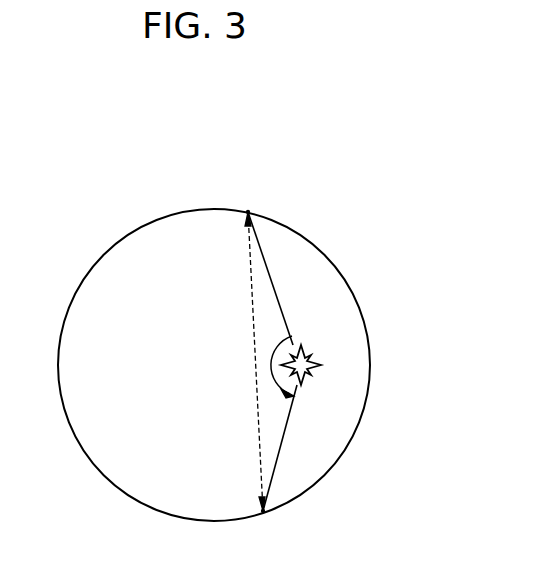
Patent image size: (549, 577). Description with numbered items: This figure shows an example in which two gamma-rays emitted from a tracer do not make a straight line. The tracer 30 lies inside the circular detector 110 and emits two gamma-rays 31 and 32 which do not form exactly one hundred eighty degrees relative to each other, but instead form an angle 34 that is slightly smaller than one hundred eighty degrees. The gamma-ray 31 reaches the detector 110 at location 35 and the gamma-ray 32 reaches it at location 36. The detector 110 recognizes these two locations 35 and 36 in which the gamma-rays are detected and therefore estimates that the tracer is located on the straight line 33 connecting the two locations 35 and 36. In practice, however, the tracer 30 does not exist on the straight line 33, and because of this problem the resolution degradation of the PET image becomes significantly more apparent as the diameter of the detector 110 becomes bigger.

The detector 110 is at (308, 240).
The tracer 30 is at (311, 350).
The gamma-ray 31 is at (280, 298).
The gamma-ray 32 is at (287, 430).
The straight line 33 is at (251, 298).
The angle 34 is at (270, 368).
The location 35 is at (252, 210).
The location 36 is at (266, 513).